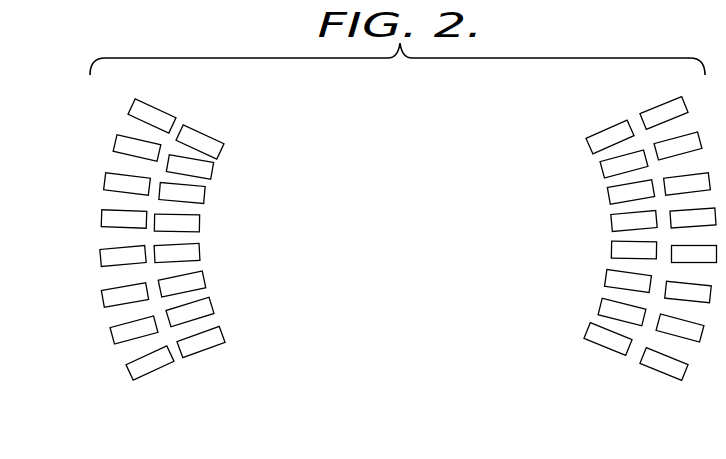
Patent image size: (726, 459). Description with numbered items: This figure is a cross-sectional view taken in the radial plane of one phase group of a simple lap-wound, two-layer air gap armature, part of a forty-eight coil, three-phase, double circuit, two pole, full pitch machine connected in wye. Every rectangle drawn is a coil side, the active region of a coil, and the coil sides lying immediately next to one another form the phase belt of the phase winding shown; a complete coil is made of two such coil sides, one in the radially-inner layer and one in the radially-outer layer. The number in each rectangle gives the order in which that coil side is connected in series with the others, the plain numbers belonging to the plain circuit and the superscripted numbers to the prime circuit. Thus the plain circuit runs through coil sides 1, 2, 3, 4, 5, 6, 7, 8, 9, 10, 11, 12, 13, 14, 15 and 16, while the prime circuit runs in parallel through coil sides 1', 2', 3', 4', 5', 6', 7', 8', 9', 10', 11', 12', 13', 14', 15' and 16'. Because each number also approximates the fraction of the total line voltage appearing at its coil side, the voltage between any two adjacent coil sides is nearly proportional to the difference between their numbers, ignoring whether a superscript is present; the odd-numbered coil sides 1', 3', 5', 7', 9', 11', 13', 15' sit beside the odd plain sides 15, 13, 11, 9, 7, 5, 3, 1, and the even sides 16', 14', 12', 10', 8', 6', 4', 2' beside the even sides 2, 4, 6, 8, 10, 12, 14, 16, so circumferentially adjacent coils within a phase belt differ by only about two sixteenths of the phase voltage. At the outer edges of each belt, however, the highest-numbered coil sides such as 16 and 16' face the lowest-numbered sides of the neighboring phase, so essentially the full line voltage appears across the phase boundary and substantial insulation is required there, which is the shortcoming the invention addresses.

The coil side 1 is at (201, 341).
The coil side 2 is at (664, 113).
The coil side 3 is at (190, 311).
The coil side 4 is at (678, 146).
The coil side 5 is at (182, 284).
The coil side 6 is at (687, 184).
The coil side 7 is at (177, 252).
The coil side 8 is at (693, 218).
The coil side 9 is at (176, 223).
The coil side 10 is at (694, 254).
The coil side 11 is at (182, 193).
The coil side 12 is at (688, 292).
The coil side 13 is at (189, 167).
The coil side 14 is at (680, 328).
The coil side 15 is at (200, 142).
The coil side 16 is at (664, 364).
The coil side 1' is at (152, 116).
The coil side 2' is at (608, 339).
The coil side 3' is at (137, 148).
The coil side 4' is at (622, 311).
The coil side 5' is at (127, 184).
The coil side 6' is at (628, 280).
The coil side 7' is at (124, 219).
The coil side 8' is at (633, 250).
The coil side 9' is at (123, 256).
The coil side 10' is at (634, 221).
The coil side 11' is at (124, 295).
The coil side 12' is at (630, 192).
The coil side 13' is at (134, 330).
The coil side 14' is at (624, 164).
The coil side 15' is at (150, 363).
The coil side 16' is at (610, 137).